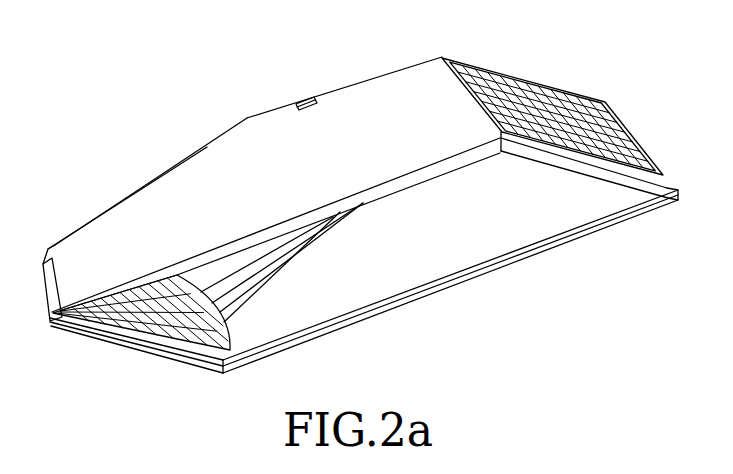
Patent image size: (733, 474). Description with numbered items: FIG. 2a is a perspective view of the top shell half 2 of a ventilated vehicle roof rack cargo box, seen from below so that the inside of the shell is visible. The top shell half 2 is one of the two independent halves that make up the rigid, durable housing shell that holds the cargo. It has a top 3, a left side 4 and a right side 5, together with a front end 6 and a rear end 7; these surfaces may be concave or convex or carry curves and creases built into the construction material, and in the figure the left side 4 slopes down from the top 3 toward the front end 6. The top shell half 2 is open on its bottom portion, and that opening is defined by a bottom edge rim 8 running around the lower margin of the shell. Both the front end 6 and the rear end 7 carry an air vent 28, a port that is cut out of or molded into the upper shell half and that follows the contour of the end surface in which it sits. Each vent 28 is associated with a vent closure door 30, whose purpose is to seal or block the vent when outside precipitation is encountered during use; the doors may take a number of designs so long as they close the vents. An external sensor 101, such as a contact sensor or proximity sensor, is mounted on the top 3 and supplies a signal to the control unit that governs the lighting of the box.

The top shell half 2 is at (150, 123).
The top 3 is at (373, 78).
The left side 4 is at (227, 178).
The right side 5 is at (518, 207).
The front end 6 is at (43, 290).
The rear end 7 is at (650, 156).
The bottom edge rim 8 is at (598, 232).
The air vent 28 is at (563, 88).
The vent closure door 30 is at (608, 118).
The external sensor 101 is at (304, 100).